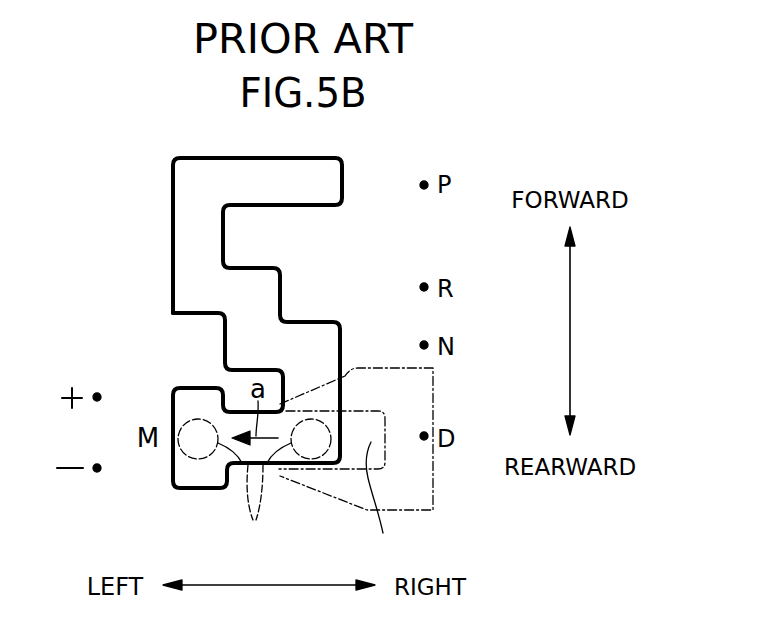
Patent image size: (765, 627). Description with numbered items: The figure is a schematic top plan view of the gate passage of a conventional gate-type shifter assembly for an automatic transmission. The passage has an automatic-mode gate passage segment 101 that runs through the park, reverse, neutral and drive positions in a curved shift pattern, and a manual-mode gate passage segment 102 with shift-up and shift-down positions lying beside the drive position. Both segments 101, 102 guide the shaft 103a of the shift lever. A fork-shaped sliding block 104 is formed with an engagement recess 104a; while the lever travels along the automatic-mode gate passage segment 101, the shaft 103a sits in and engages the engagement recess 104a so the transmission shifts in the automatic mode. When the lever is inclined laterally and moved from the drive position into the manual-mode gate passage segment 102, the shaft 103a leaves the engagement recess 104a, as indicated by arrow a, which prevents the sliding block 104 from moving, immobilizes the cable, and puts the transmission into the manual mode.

The automatic-mode gate passage segment 101 is at (258, 270).
The manual-mode gate passage segment 102 is at (175, 400).
The shaft 103a is at (255, 508).
The sliding block 104 is at (427, 395).
The engagement recess 104a is at (379, 505).